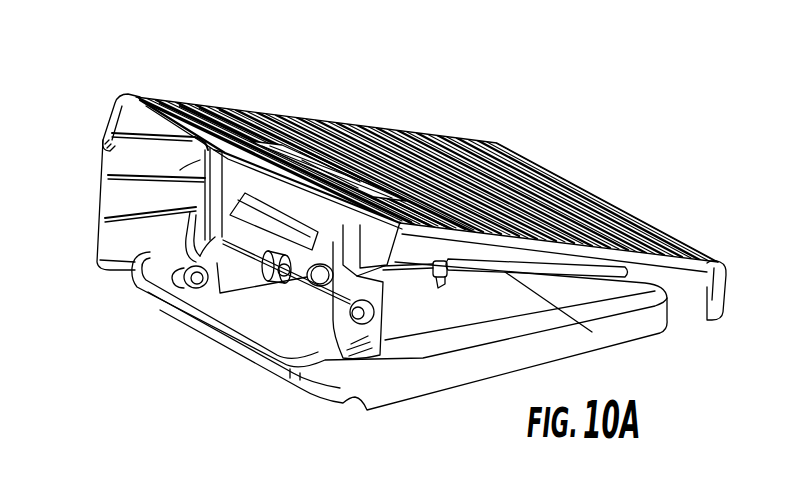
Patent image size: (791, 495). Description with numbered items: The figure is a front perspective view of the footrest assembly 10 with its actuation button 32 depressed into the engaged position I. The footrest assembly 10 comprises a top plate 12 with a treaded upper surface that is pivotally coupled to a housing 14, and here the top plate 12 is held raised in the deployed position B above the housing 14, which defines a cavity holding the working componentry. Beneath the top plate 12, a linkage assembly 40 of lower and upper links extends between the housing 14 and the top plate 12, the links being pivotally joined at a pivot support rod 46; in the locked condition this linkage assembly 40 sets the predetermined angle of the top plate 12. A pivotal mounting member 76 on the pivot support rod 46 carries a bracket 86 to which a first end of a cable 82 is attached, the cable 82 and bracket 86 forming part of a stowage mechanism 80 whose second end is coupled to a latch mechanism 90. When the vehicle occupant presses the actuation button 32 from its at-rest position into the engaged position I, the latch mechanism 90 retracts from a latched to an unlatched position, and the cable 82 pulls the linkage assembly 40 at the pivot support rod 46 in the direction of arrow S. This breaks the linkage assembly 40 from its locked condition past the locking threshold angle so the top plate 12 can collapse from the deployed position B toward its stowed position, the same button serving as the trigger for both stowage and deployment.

The footrest assembly 10 is at (643, 172).
The top plate 12 is at (615, 203).
The housing 14 is at (665, 333).
The actuation button 32 is at (312, 158).
The linkage assembly 40 is at (333, 327).
The pivot support rod 46 is at (195, 290).
The pivotal mounting member 76 is at (233, 248).
The stowage mechanism 80 is at (487, 288).
The cable 82 is at (443, 264).
The bracket 86 is at (300, 252).
The latch mechanism 90 is at (255, 217).
The deployed position B is at (117, 101).
The engaged position I is at (268, 150).
The arrow S is at (432, 296).